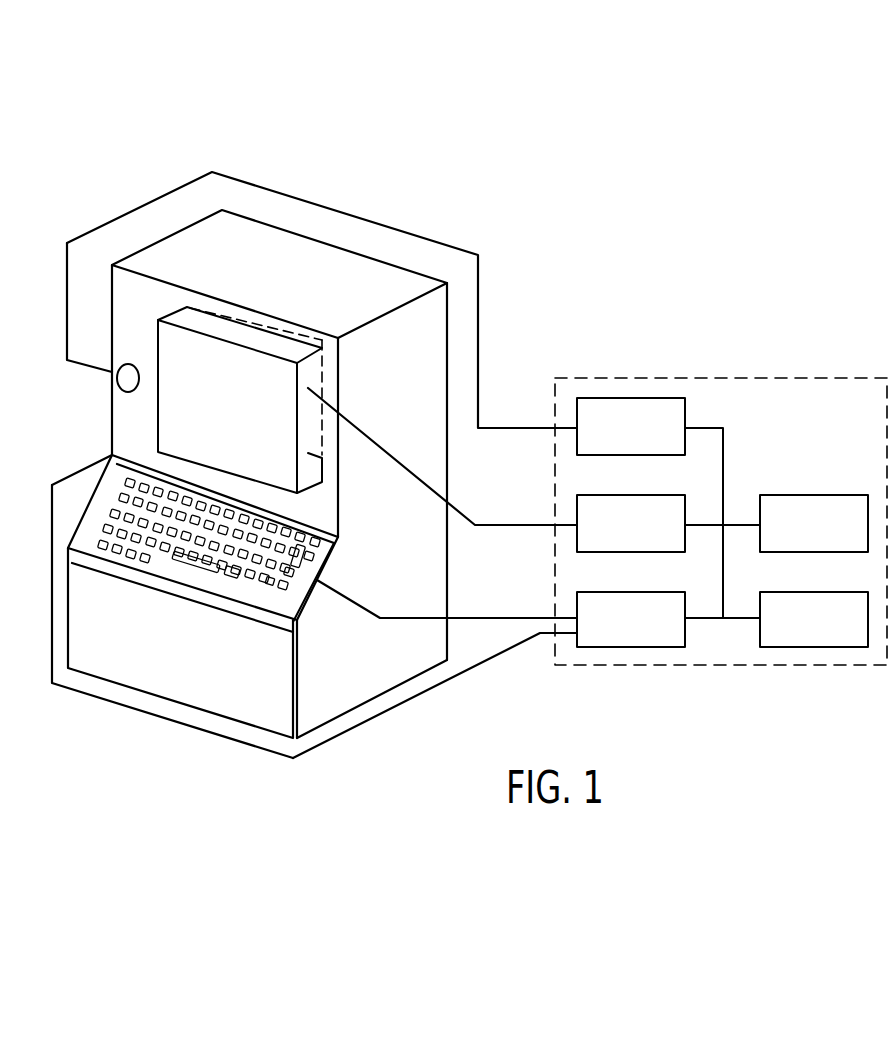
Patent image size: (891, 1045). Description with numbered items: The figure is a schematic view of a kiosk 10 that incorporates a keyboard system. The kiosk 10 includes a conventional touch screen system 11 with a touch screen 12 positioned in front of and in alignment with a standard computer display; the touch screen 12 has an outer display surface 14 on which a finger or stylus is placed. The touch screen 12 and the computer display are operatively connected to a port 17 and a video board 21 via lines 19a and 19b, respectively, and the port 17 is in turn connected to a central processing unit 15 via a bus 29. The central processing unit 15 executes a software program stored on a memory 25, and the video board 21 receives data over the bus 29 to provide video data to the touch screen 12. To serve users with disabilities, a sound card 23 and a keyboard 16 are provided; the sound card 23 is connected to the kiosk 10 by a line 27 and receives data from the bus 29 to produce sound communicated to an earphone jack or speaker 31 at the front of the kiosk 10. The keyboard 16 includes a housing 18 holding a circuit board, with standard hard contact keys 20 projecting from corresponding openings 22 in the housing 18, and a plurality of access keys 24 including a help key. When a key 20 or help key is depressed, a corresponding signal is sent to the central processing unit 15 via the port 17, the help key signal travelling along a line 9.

The kiosk 10 is at (370, 198).
The touch screen system 11 is at (145, 417).
The touch screen 12 is at (217, 324).
The display surface 14 is at (209, 424).
The earphone jack or speaker 31 is at (126, 363).
The line 27 is at (439, 241).
The line 19b is at (370, 433).
The line 9 is at (385, 617).
The line 19a is at (365, 732).
The keyboard 16 is at (125, 561).
The housing 18 is at (197, 594).
The keys 20 is at (231, 580).
The openings 22 is at (313, 541).
The access keys 24 is at (303, 594).
The sound card 23 is at (613, 398).
The video board 21 is at (676, 495).
The memory 25 is at (831, 495).
The port 17 is at (669, 592).
The central processing unit 15 is at (839, 592).
The bus 29 is at (714, 625).